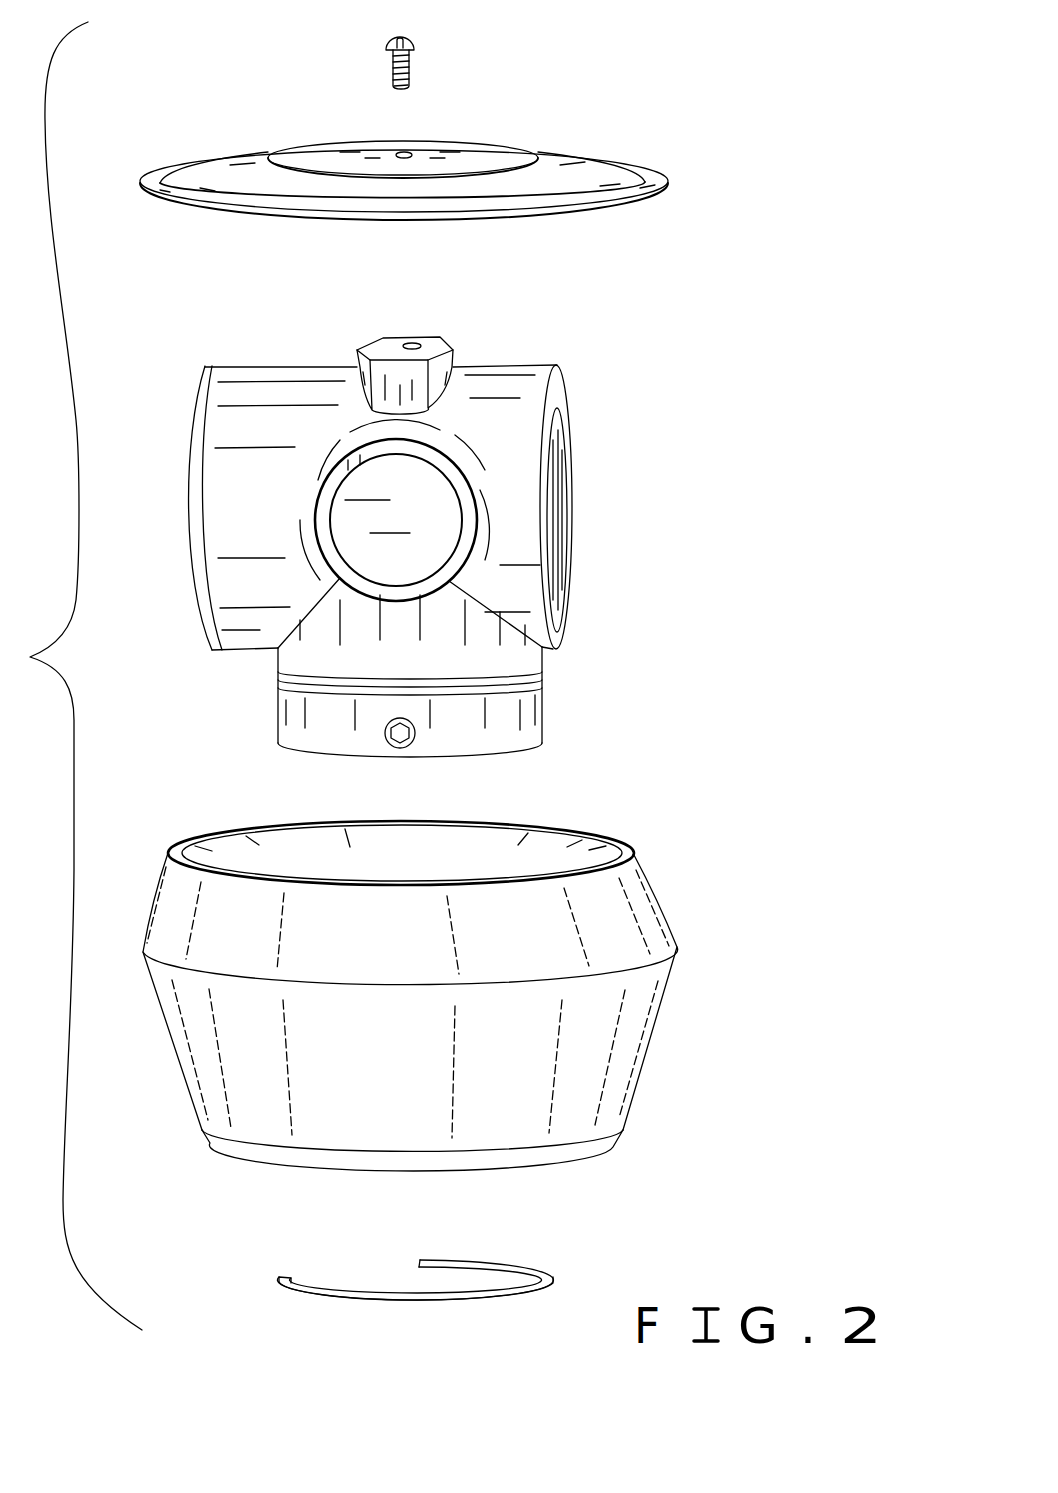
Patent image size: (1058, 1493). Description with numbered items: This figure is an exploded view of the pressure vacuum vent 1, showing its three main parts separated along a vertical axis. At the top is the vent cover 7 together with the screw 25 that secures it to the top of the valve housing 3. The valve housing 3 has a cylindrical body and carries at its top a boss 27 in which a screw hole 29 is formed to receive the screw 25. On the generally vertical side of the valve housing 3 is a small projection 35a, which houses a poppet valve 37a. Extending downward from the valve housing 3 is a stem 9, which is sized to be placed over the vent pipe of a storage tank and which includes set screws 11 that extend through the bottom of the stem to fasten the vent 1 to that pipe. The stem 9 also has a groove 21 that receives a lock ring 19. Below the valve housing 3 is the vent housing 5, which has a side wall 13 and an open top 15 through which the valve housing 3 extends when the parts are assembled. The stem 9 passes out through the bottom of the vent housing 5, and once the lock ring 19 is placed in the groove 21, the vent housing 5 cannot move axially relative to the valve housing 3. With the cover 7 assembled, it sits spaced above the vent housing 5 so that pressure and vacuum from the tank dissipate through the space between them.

The pressure vacuum vent 1 is at (678, 289).
The valve housing 3 is at (565, 361).
The vent housing 5 is at (676, 873).
The vent cover 7 is at (633, 146).
The stem 9 is at (545, 705).
The set screws 11 is at (394, 748).
The side wall 13 is at (668, 988).
The open top 15 is at (597, 853).
The lock ring 19 is at (548, 1270).
The groove 21 is at (543, 672).
The screw 25 is at (415, 38).
The boss 27 is at (450, 340).
The screw hole 29 is at (412, 343).
The projection 35a is at (470, 467).
The poppet valve 37a is at (430, 510).